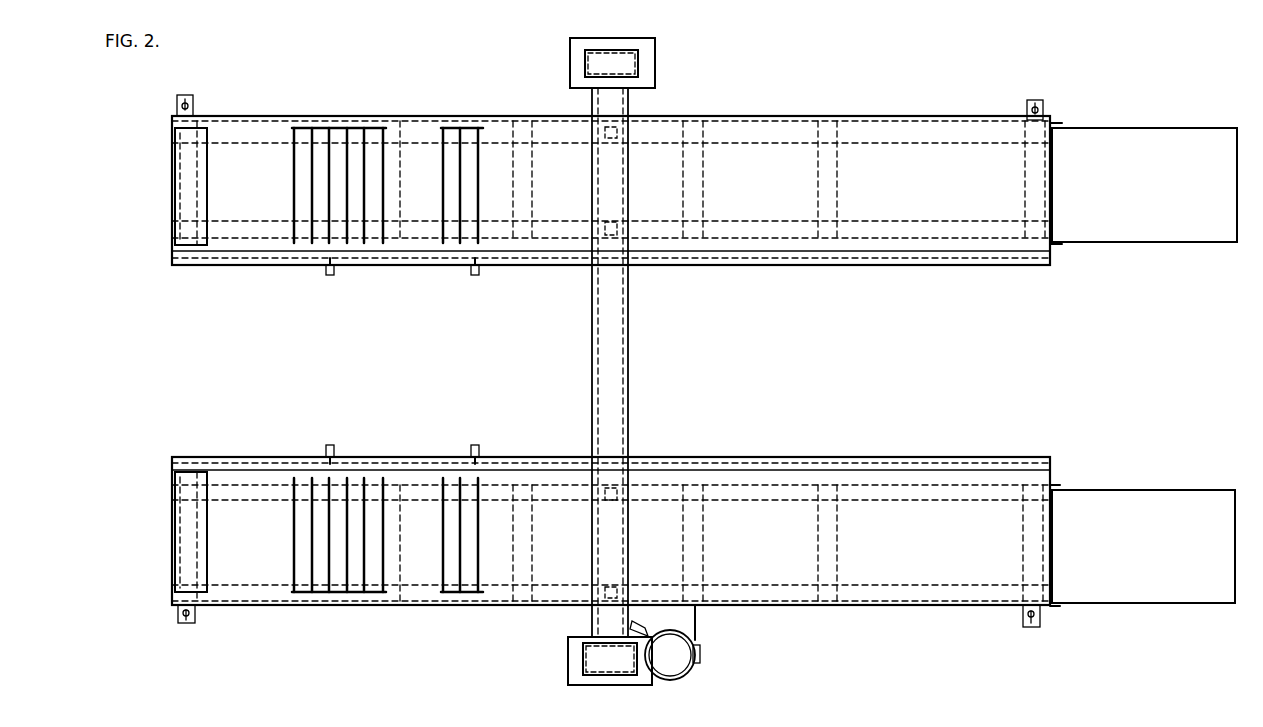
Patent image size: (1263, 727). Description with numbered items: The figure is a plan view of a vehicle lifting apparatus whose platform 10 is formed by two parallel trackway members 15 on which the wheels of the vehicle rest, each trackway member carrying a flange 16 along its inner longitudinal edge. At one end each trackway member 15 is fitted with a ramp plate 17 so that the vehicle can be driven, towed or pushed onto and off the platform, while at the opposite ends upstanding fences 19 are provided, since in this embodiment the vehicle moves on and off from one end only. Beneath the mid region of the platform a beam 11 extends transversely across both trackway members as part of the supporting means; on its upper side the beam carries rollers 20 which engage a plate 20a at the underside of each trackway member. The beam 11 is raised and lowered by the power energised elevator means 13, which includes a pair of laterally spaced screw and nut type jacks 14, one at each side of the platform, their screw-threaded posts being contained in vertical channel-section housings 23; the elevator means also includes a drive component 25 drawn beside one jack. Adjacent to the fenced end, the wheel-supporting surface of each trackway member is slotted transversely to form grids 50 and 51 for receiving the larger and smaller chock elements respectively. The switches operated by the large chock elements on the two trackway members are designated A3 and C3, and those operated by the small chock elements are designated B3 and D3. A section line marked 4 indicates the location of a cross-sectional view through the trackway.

The platform 10 is at (896, 118).
The beam 11 is at (618, 358).
The power energised elevator means 13 is at (716, 632).
The screw and nut type jack 14 is at (552, 51).
The trackway member 15 is at (893, 361).
The flange 16 is at (866, 267).
The ramp plate 17 is at (1143, 364).
The upstanding fence 19 is at (172, 174).
The roller 20 is at (630, 126).
The plate 20a is at (672, 128).
The vertical channel-section housing 23 is at (646, 56).
The drive wheel 25 is at (670, 655).
The grid 50 is at (323, 127).
The grid 51 is at (460, 127).
The switch A3 is at (330, 276).
The switch B3 is at (475, 276).
The switch C3 is at (336, 440).
The switch D3 is at (476, 447).
The section line 4 is at (302, 427).